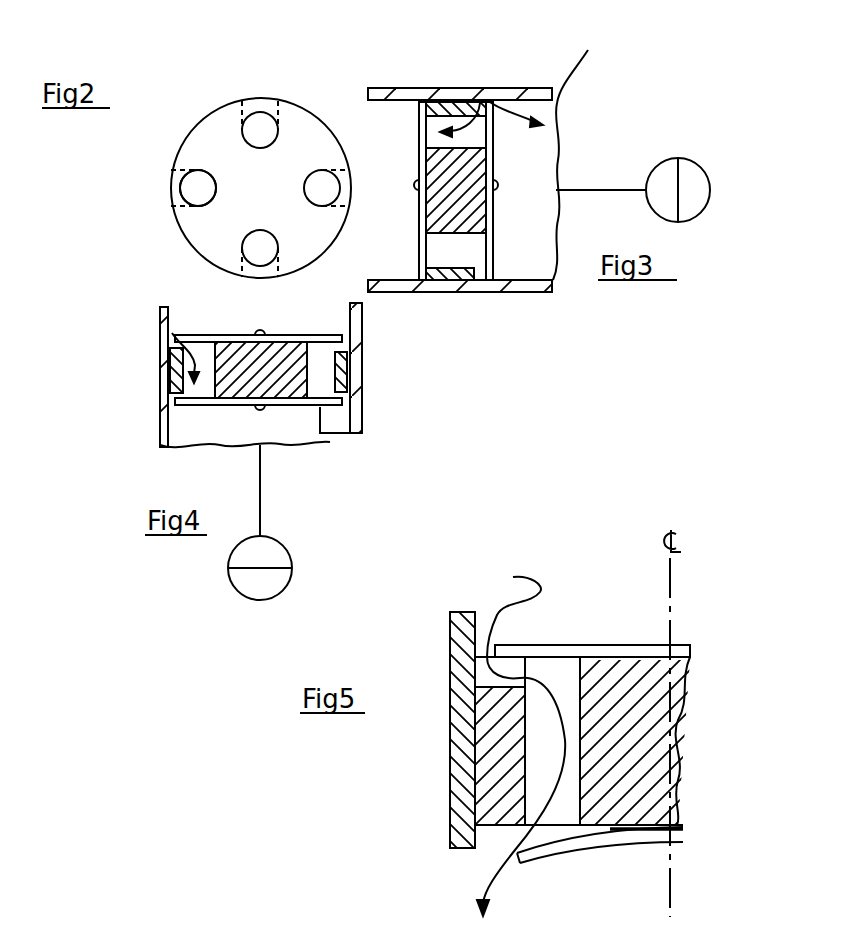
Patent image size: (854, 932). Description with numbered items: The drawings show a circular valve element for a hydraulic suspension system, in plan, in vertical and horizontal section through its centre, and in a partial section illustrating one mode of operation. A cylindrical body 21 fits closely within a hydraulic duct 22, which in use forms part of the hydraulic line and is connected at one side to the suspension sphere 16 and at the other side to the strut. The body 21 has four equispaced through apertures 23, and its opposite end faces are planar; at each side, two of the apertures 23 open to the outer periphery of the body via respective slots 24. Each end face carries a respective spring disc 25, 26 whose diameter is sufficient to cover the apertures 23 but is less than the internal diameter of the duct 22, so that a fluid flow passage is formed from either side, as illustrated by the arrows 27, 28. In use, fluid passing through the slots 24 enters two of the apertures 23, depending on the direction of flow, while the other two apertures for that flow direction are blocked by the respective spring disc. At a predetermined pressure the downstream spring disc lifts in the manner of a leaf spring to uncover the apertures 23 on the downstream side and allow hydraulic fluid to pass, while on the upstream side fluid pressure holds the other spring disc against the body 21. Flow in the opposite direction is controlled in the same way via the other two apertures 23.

In FIG. 3, the suspension sphere 16 is at (700, 160).
In FIG. 4, the suspension sphere 16 is at (228, 580).
In FIG. 2, the cylindrical body 21 is at (212, 131).
In FIG. 5, the cylindrical body 21 is at (677, 710).
In FIG. 3, the hydraulic duct 22 is at (521, 96).
In FIG. 4, the hydraulic duct 22 is at (160, 441).
In FIG. 5, the hydraulic duct 22 is at (453, 710).
In FIG. 2, the through apertures 23 is at (197, 193).
In FIG. 3, the through apertures 23 is at (441, 250).
In FIG. 2, the slots 24 is at (178, 188).
In FIG. 3, the slots 24 is at (480, 273).
In FIG. 5, the slots 24 is at (537, 750).
In FIG. 3, the spring disc 25 is at (493, 137).
In FIG. 4, the spring disc 25 is at (323, 437).
In FIG. 5, the spring disc 25 is at (575, 847).
In FIG. 3, the spring disc 26 is at (420, 118).
In FIG. 4, the spring disc 26 is at (180, 336).
In FIG. 5, the spring disc 26 is at (597, 647).
In FIG. 3, the arrow 27 is at (580, 151).
In FIG. 4, the arrow 28 is at (158, 322).
In FIG. 5, the arrow 28 is at (521, 738).